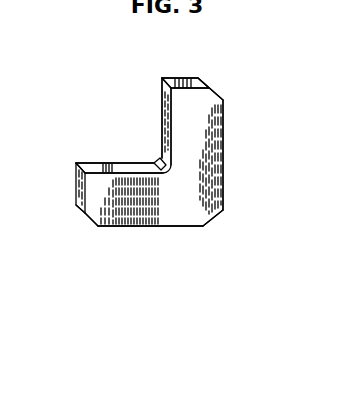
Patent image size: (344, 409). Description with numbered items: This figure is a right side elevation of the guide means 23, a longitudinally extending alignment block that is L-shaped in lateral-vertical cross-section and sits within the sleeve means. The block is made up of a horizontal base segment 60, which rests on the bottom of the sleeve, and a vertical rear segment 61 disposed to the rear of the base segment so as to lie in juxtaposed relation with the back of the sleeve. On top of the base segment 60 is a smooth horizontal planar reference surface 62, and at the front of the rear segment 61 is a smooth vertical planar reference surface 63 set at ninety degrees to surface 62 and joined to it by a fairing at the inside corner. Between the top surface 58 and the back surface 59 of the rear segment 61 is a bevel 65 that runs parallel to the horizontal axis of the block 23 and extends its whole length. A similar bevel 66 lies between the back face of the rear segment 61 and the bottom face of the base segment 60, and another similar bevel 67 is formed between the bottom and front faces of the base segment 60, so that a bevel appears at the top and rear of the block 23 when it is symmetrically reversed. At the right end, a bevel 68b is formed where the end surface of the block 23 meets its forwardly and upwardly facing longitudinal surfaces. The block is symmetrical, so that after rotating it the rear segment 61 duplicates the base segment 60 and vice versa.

The guide means 23 is at (185, 120).
The top surface 58 is at (183, 79).
The back surface 59 is at (224, 113).
The horizontal base segment 60 is at (160, 217).
The vertical rear segment 61 is at (208, 167).
The horizontal planar reference surface 62 is at (138, 163).
The vertical planar reference surface 63 is at (166, 100).
The bevel 65 is at (213, 92).
The bevel 66 is at (212, 215).
The bevel 67 is at (85, 213).
The bevel 68b is at (97, 163).